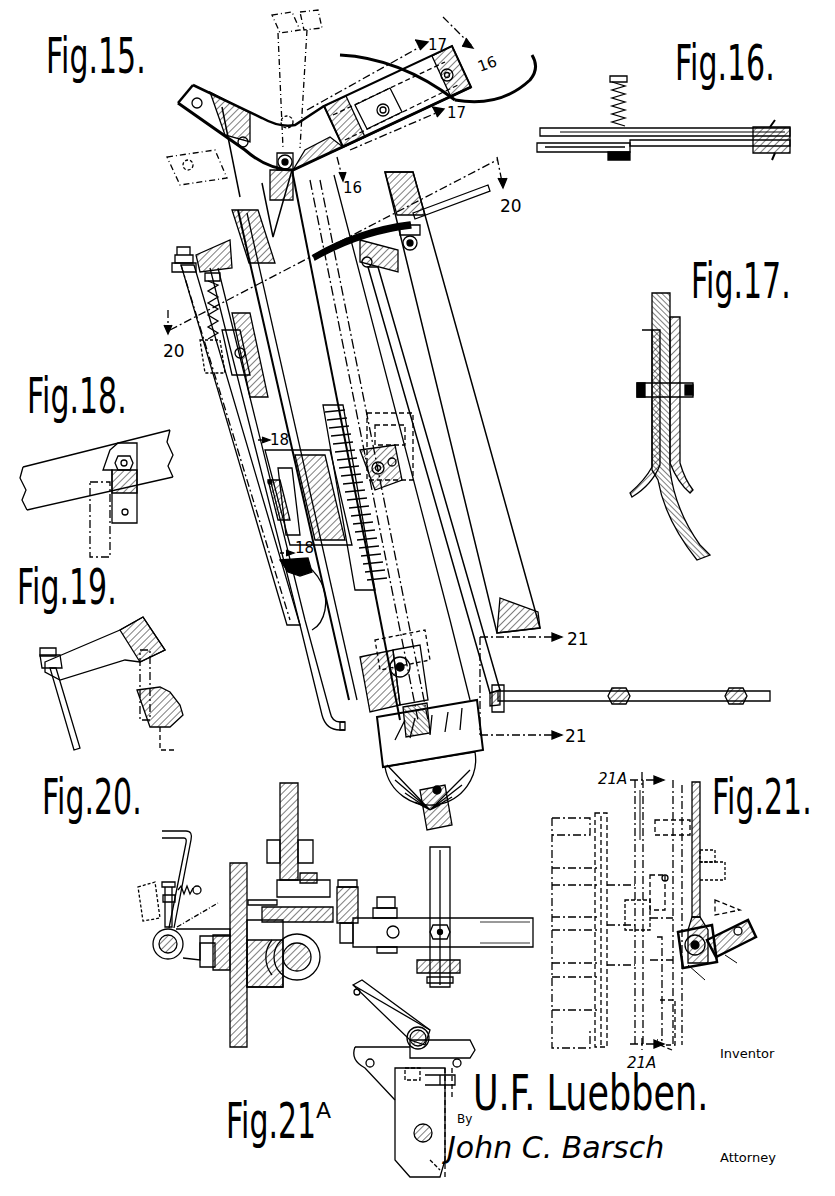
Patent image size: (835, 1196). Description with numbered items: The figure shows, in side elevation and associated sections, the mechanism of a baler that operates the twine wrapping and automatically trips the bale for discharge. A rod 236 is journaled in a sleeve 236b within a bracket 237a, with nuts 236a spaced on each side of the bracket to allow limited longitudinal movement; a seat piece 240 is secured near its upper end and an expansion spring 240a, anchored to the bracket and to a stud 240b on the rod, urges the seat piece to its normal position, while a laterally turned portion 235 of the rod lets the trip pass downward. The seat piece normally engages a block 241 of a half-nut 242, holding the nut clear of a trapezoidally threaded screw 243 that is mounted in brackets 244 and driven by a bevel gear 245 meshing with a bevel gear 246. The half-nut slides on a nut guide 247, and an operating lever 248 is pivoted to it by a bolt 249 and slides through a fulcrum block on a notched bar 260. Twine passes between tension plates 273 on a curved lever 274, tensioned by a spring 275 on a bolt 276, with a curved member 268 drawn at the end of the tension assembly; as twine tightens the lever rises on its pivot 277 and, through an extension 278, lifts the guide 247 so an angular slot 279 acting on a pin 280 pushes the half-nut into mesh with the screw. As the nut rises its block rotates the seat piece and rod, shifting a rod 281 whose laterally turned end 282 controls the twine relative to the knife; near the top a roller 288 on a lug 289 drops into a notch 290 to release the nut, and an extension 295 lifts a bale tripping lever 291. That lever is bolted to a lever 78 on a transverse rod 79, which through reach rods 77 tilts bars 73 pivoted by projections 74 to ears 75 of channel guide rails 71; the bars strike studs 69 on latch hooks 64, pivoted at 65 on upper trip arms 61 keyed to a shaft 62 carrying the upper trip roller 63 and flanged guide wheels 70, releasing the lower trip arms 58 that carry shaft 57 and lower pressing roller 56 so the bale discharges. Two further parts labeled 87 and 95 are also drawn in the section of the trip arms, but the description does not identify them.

In FIG. 21, the lower pressing roller 56 is at (552, 1022).
In FIG. 21, the shaft 57 is at (640, 980).
In FIG. 21A, the shaft 57 is at (414, 1134).
In FIG. 21, the lower trip arms 58 is at (675, 1050).
In FIG. 21A, the lower trip arms 58 is at (445, 1165).
In FIG. 21, the upper trip arms 61 is at (680, 1005).
In FIG. 21A, the upper trip arms 61 is at (395, 1112).
In FIG. 21, the shaft 62 is at (710, 870).
In FIG. 21A, the shaft 62 is at (425, 1030).
In FIG. 21, the upper trip roller 63 is at (580, 820).
In FIG. 21, the latch hooks 64 is at (635, 895).
In FIG. 21A, the latch hooks 64 is at (475, 1057).
In FIG. 21A, the pivot 65 is at (365, 1060).
In FIG. 21, the studs 69 is at (663, 875).
In FIG. 21A, the studs 69 is at (457, 1059).
In FIG. 21, the flanged guide wheel 70 is at (715, 852).
In FIG. 21, the guide rails 71 is at (722, 905).
In FIG. 15, the tilting bars 73 is at (565, 690).
In FIG. 21, the tilting bars 73 is at (705, 968).
In FIG. 15, the projections 74 is at (630, 688).
In FIG. 21, the projections 74 is at (740, 950).
In FIG. 21, the ears 75 is at (738, 965).
In FIG. 15, the reach rods 77 is at (390, 335).
In FIG. 20, the reach rods 77 is at (387, 895).
In FIG. 21, the reach rods 77 is at (700, 840).
In FIG. 15, the levers 78 is at (388, 270).
In FIG. 20, the levers 78 is at (420, 920).
In FIG. 15, the transverse rod 79 is at (418, 243).
In FIG. 20, the transverse rod 79 is at (425, 957).
In FIG. 21, the rod 87 is at (642, 778).
In FIG. 21, the rod 95 is at (680, 778).
In FIG. 15, the laterally turned portion 235 is at (343, 720).
In FIG. 15, the rod 236 is at (298, 645).
In FIG. 19, the rod 236 is at (70, 715).
In FIG. 20, the rod 236 is at (152, 948).
In FIG. 15, the nuts 236a is at (180, 245).
In FIG. 15, the sleeve 236b is at (174, 262).
In FIG. 15, the bracket 237a is at (210, 250).
In FIG. 19, the bracket 237a is at (82, 650).
In FIG. 15, the seat piece 240 is at (245, 385).
In FIG. 18, the seat piece 240 is at (110, 550).
In FIG. 20, the seat piece 240 is at (195, 950).
In FIG. 15, the expansion spring 240a is at (205, 300).
In FIG. 20, the expansion spring 240a is at (200, 885).
In FIG. 15, the stud 240b is at (205, 368).
In FIG. 20, the stud 240b is at (160, 912).
In FIG. 15, the block 241 is at (292, 520).
In FIG. 18, the block 241 is at (137, 500).
In FIG. 20, the block 241 is at (225, 968).
In FIG. 15, the half-nut 242 is at (280, 545).
In FIG. 19, the half-nut 242 is at (183, 710).
In FIG. 20, the half-nut 242 is at (265, 990).
In FIG. 15, the trapezoidally threaded screw 243 is at (385, 560).
In FIG. 19, the trapezoidally threaded screw 243 is at (175, 738).
In FIG. 20, the trapezoidally threaded screw 243 is at (305, 968).
In FIG. 15, the brackets 244 is at (452, 795).
In FIG. 15, the bevel gear 245 is at (448, 718).
In FIG. 15, the bevel gear 246 is at (468, 770).
In FIG. 15, the nut guide 247 is at (322, 318).
In FIG. 20, the nut guide 247 is at (320, 925).
In FIG. 15, the operating lever 248 is at (278, 435).
In FIG. 18, the operating lever 248 is at (75, 458).
In FIG. 20, the operating lever 248 is at (236, 1040).
In FIG. 15, the bolt 249 is at (272, 492).
In FIG. 18, the bolt 249 is at (122, 455).
In FIG. 20, the bolt 249 is at (205, 970).
In FIG. 20, the bar 260 is at (295, 790).
In FIG. 15, the curved guide 268 is at (535, 48).
In FIG. 16, the curved guide 268 is at (775, 158).
In FIG. 17, the curved guide 268 is at (693, 523).
In FIG. 15, the tension plates 273 is at (420, 120).
In FIG. 16, the tension plates 273 is at (680, 128).
In FIG. 17, the tension plates 273 is at (642, 357).
In FIG. 15, the curved lever 274 is at (305, 165).
In FIG. 16, the curved lever 274 is at (575, 153).
In FIG. 16, the spring 275 is at (628, 100).
In FIG. 15, the bolt 276 is at (388, 140).
In FIG. 16, the bolt 276 is at (618, 76).
In FIG. 15, the pivot 277 is at (238, 120).
In FIG. 15, the extension 278 is at (262, 195).
In FIG. 15, the angular slot 279 is at (380, 700).
In FIG. 15, the pin 280 is at (412, 660).
In FIG. 15, the rod 281 is at (313, 595).
In FIG. 20, the rod 281 is at (172, 870).
In FIG. 15, the laterally turned end 282 is at (300, 575).
In FIG. 20, the laterally turned end 282 is at (178, 830).
In FIG. 15, the roller 288 is at (390, 445).
In FIG. 20, the roller 288 is at (350, 895).
In FIG. 15, the lug 289 is at (400, 478).
In FIG. 15, the notch 290 is at (303, 260).
In FIG. 15, the bale tripping lever 291 is at (478, 203).
In FIG. 20, the bale tripping lever 291 is at (492, 946).
In FIG. 15, the extension 295 is at (372, 420).